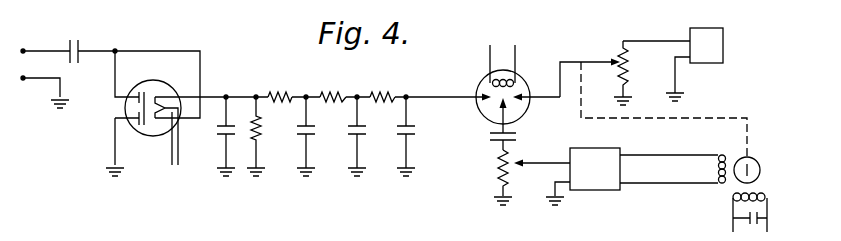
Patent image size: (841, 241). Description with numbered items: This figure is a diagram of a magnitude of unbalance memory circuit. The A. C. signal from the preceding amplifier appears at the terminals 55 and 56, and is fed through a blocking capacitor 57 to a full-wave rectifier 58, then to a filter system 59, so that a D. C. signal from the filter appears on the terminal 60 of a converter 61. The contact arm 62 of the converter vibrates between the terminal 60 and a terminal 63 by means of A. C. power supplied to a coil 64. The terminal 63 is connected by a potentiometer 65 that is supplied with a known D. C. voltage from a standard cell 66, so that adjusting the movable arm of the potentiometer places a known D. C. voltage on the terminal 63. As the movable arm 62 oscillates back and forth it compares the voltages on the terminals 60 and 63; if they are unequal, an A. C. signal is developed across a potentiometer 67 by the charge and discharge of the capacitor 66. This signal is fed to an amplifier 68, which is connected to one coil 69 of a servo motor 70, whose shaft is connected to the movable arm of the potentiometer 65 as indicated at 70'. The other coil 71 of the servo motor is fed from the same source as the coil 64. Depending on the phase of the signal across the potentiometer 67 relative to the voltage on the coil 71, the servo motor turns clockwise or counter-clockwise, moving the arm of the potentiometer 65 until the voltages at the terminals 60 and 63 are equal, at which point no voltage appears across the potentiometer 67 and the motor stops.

The terminal 55 is at (23, 48).
The terminal 56 is at (22, 80).
The blocking capacitor 57 is at (79, 47).
The full-wave rectifier 58 is at (161, 78).
The filter system 59 is at (309, 88).
The terminal 60 is at (459, 80).
The converter 61 is at (524, 70).
The contact arm 62 is at (497, 113).
The terminal 63 is at (543, 99).
The coil 64 is at (500, 79).
The potentiometer 65 is at (620, 52).
The standard cell 66 is at (488, 137).
The potentiometer 67 is at (500, 169).
The amplifier 68 is at (583, 176).
The coil 69 is at (716, 167).
The servo motor 70 is at (727, 193).
The shaft connection 70' is at (664, 109).
The coil 71 is at (758, 204).